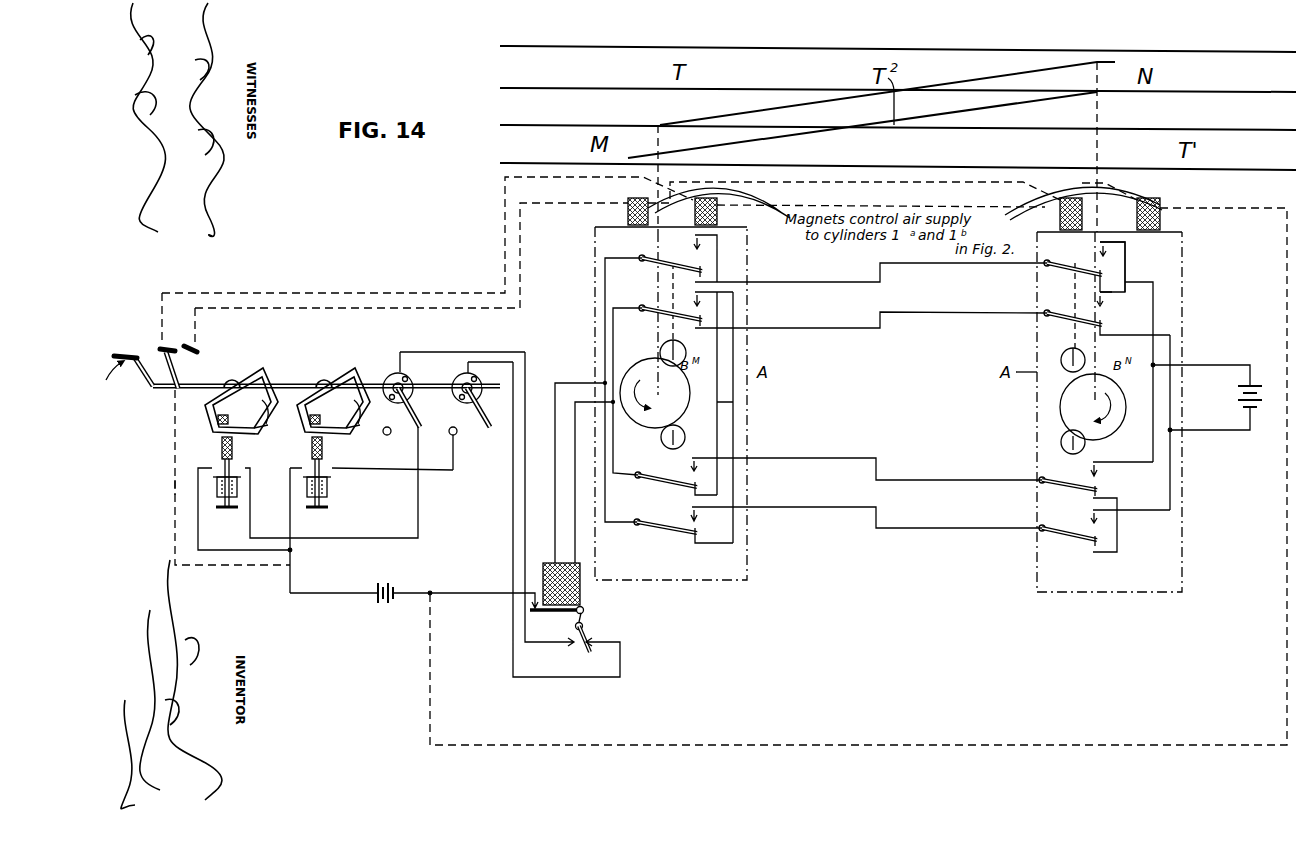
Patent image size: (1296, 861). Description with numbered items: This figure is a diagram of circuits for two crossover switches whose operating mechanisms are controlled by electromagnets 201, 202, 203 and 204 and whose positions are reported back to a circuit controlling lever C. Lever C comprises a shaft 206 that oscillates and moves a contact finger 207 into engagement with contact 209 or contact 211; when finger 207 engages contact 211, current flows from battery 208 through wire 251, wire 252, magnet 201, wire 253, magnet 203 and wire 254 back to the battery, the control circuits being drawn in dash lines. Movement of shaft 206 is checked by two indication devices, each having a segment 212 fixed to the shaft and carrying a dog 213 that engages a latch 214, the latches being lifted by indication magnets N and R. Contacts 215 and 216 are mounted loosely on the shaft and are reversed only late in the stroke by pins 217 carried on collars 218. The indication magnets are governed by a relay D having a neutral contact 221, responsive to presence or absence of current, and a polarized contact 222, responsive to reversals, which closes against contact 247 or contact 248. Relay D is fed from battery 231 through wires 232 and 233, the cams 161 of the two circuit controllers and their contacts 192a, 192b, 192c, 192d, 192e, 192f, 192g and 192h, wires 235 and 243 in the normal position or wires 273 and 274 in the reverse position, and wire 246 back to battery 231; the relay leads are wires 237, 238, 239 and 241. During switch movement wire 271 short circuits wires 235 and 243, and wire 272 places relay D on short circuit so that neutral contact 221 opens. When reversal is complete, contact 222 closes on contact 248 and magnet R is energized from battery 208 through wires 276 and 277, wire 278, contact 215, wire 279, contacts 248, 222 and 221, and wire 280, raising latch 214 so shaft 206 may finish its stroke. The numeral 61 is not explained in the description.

The electromagnet 201 is at (628, 214).
The electromagnet 202 is at (717, 214).
The electromagnet 203 is at (1060, 216).
The electromagnet 204 is at (1160, 216).
The wire 253 is at (812, 185).
The shaft 206 is at (317, 377).
The contact finger 207 is at (173, 366).
The contact 209 is at (160, 346).
The contact 211 is at (198, 349).
The segment 212 is at (262, 366).
The dog 213 is at (356, 430).
The latch 214 is at (232, 449).
The contact 215 is at (420, 412).
The contact 216 is at (484, 414).
The pin 217 is at (407, 378).
The collar 218 is at (393, 384).
The wire 252 is at (436, 331).
The wire 279 is at (500, 346).
The wire 251 is at (175, 487).
The indication electromagnet R is at (217, 487).
The indication electromagnet N is at (327, 487).
The wire 61 is at (290, 517).
The wire 277 is at (220, 556).
The wire 278 is at (364, 537).
The wire 276 is at (318, 590).
The battery 208 is at (385, 604).
The wire 280 is at (478, 592).
The neutral contact 221 is at (557, 622).
The polarized contact 222 is at (588, 632).
The contact 248 is at (575, 656).
The contact 247 is at (620, 664).
The relay D is at (553, 584).
The wire 237 is at (605, 293).
The wire 238 is at (548, 476).
The wire 239 is at (575, 508).
The wire 241 is at (612, 425).
The cam 161 is at (688, 398).
The wire 272 is at (733, 402).
The wire 235 is at (915, 262).
The wire 243 is at (922, 315).
The wire 273 is at (925, 474).
The wire 274 is at (925, 524).
The contact 192a is at (720, 466).
The contact 192b is at (700, 488).
The contact 192c is at (700, 520).
The contact 192d is at (1100, 245).
The contact 192e is at (717, 240).
The contact 192f is at (702, 272).
The contact 192g is at (700, 298).
The contact 192h is at (702, 321).
The wire 254 is at (1287, 298).
The wire 271 is at (1125, 250).
The wire 233 is at (1153, 318).
The wire 246 is at (1170, 468).
The wire 232 is at (1232, 360).
The battery 231 is at (1238, 402).
The circuit controlling lever C is at (129, 371).